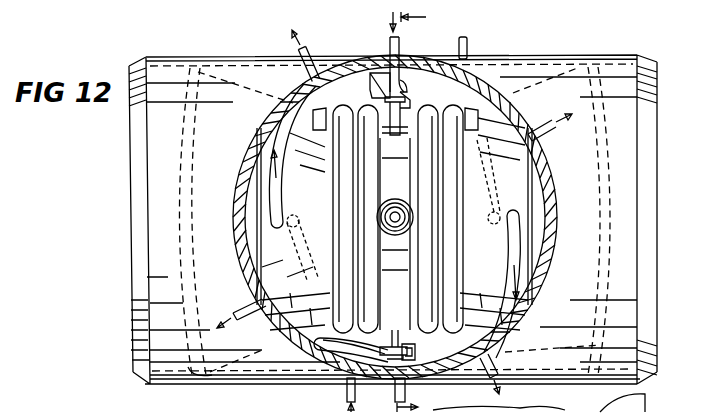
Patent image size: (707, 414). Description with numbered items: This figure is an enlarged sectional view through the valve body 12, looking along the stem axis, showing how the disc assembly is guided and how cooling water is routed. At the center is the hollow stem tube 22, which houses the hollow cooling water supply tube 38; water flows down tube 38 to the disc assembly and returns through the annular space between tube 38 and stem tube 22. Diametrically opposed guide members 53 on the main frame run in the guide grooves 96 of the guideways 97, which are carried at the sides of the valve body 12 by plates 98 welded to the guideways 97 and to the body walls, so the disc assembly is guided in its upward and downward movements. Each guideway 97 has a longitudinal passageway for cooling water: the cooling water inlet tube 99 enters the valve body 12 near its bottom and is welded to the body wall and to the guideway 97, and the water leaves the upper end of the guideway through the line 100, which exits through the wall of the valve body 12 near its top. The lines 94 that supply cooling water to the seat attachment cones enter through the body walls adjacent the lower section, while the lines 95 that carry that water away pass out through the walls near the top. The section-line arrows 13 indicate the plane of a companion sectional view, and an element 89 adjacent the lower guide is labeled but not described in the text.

The valve body 12 is at (557, 53).
The flow direction arrows 13 is at (397, 212).
The stem tube 22 is at (395, 201).
The cooling water supply tube 38 is at (397, 236).
The guide members 53 is at (383, 100).
The lower bracket 89 is at (416, 352).
The cooling water supply lines 94 is at (470, 52).
The cooling water outlet lines 95 is at (500, 358).
The guide grooves 96 is at (389, 95).
The guideways 97 is at (401, 93).
The plates 98 is at (412, 88).
The cooling water inlet tube 99 is at (390, 38).
The cooling water outlet line 100 is at (232, 300).